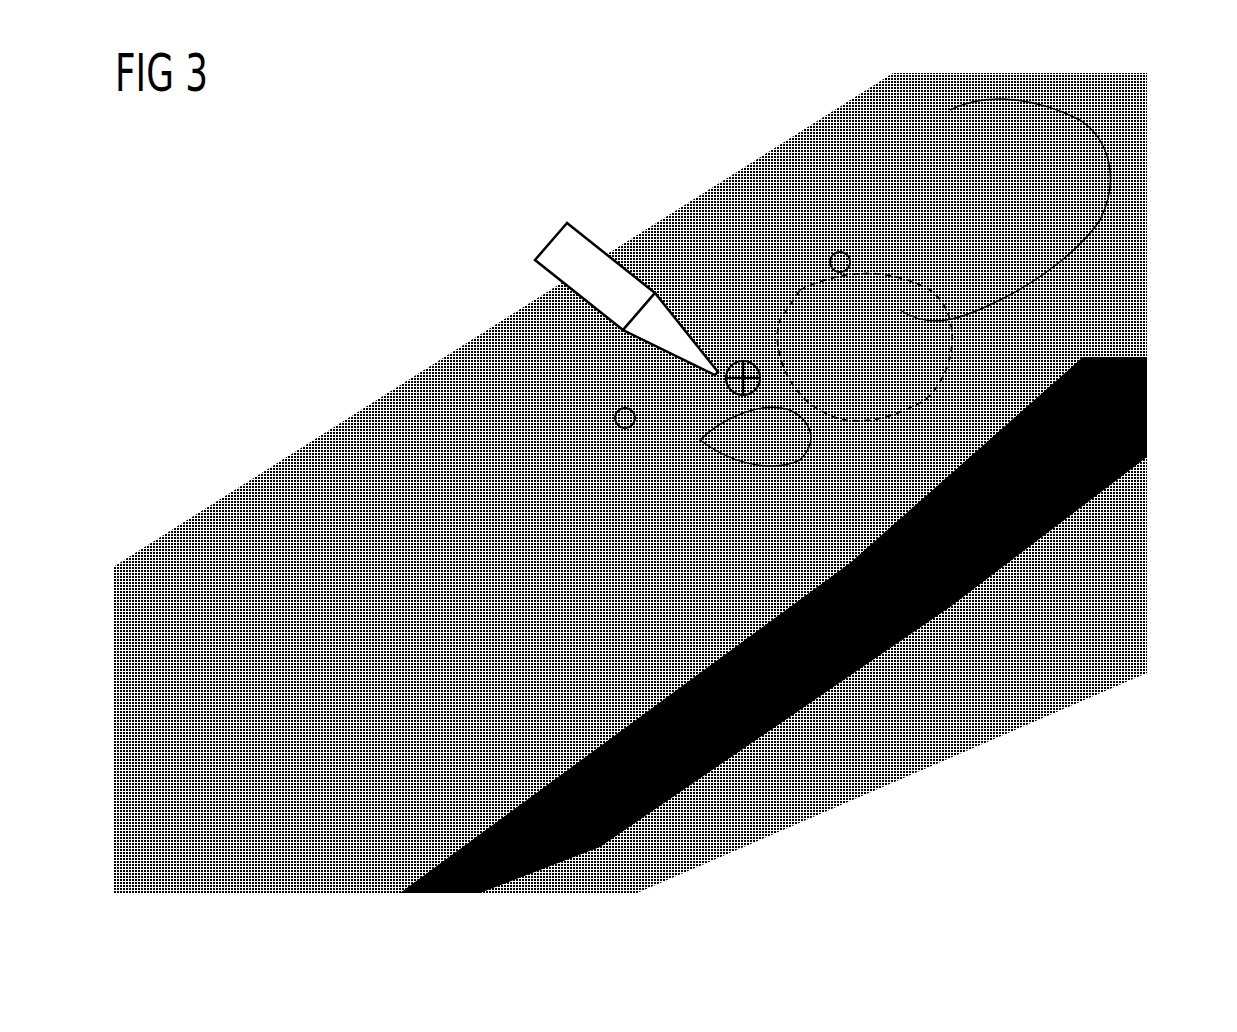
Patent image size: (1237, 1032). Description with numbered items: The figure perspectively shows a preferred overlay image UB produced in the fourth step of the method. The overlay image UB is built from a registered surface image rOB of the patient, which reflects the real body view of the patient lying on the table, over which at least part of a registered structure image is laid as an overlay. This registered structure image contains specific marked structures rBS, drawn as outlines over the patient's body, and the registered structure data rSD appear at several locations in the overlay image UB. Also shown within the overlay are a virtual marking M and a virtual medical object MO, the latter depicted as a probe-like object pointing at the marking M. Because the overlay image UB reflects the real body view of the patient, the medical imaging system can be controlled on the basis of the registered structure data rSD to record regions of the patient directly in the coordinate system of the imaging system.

The overlay image UB is at (1000, 776).
The registered surface image rOB is at (1070, 353).
The marked structures rBS is at (800, 285).
The registered structure data rSD is at (838, 256).
The virtual marking M is at (722, 352).
The virtual medical object MO is at (553, 237).